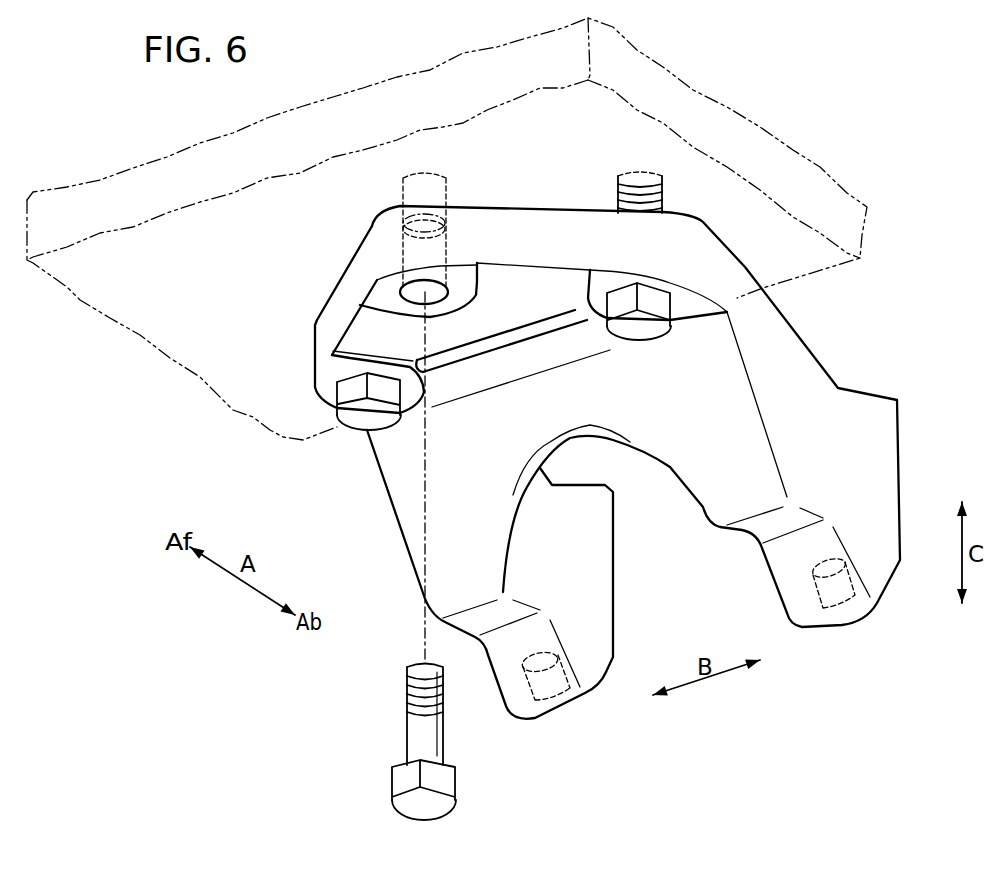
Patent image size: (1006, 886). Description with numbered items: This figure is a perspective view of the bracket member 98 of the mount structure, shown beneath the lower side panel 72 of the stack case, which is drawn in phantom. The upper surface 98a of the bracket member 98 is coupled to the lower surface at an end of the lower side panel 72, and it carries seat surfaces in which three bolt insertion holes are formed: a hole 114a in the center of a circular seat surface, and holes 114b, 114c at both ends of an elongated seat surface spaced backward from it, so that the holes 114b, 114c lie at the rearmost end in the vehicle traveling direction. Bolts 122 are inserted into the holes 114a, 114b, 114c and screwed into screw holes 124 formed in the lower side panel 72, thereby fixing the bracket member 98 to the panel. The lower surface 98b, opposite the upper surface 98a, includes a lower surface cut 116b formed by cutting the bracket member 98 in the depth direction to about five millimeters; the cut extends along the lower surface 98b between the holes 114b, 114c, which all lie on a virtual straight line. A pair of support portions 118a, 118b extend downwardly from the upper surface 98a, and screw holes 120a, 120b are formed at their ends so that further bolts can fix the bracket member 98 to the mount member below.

The lower side panel 72 is at (823, 165).
The bracket member 98 is at (815, 326).
The upper surface 98a is at (567, 210).
The lower surface 98b is at (362, 342).
The hole 114a is at (408, 290).
The hole 114b is at (350, 389).
The hole 114c is at (653, 298).
The lower surface cut 116b is at (522, 340).
The support portion 118a is at (600, 556).
The support portion 118b is at (880, 477).
The screw hole 120a is at (550, 683).
The screw hole 120b is at (837, 590).
The bolt 122 is at (363, 423).
The screw hole 124 is at (423, 186).